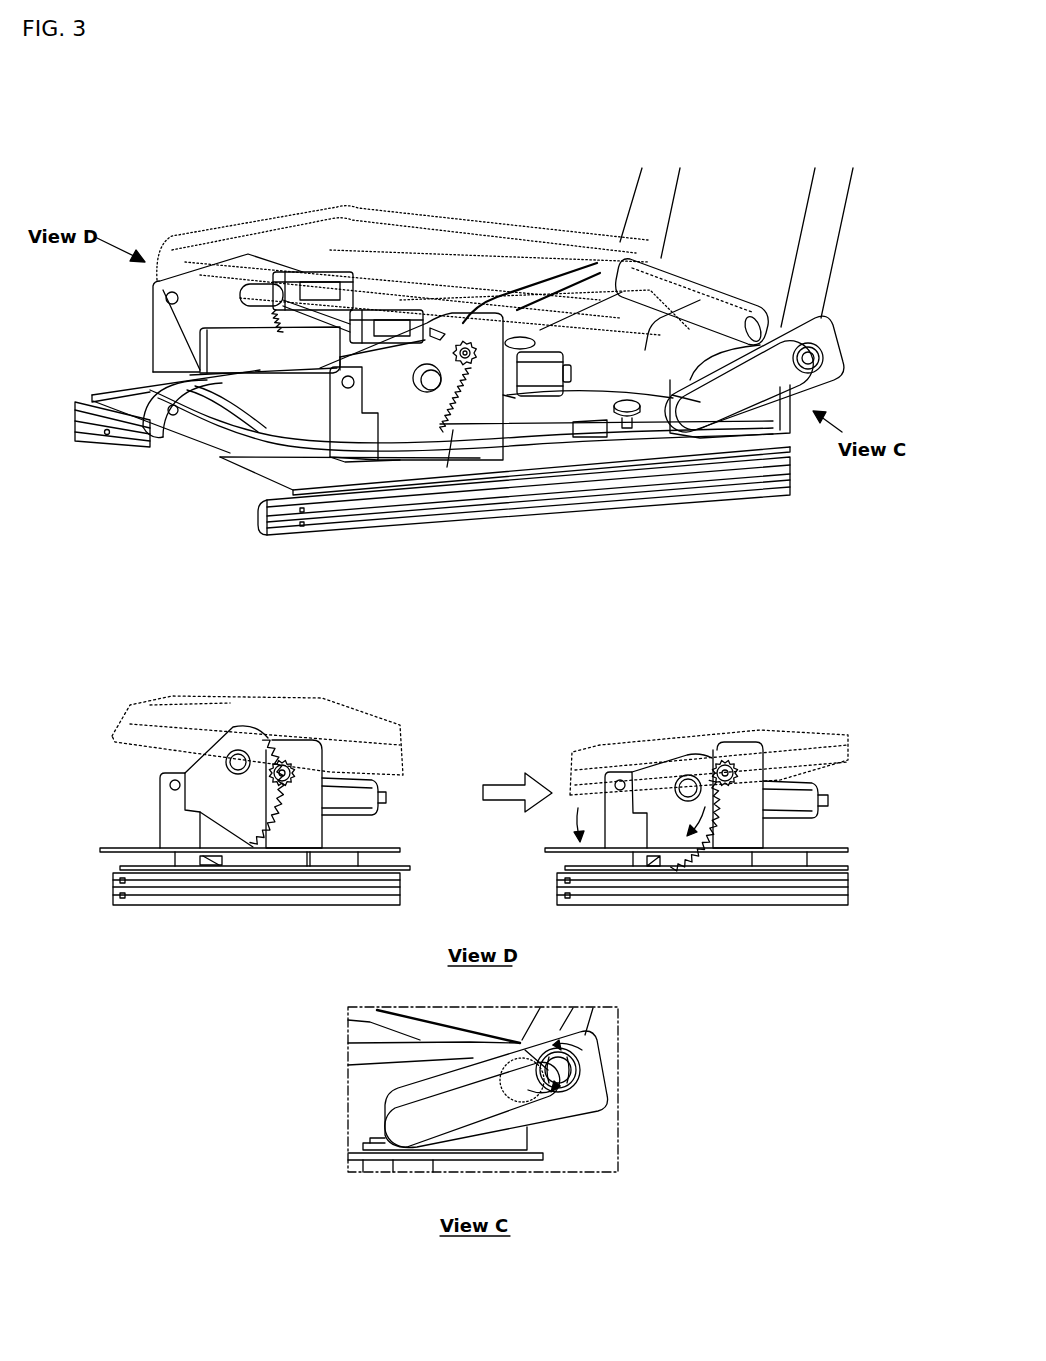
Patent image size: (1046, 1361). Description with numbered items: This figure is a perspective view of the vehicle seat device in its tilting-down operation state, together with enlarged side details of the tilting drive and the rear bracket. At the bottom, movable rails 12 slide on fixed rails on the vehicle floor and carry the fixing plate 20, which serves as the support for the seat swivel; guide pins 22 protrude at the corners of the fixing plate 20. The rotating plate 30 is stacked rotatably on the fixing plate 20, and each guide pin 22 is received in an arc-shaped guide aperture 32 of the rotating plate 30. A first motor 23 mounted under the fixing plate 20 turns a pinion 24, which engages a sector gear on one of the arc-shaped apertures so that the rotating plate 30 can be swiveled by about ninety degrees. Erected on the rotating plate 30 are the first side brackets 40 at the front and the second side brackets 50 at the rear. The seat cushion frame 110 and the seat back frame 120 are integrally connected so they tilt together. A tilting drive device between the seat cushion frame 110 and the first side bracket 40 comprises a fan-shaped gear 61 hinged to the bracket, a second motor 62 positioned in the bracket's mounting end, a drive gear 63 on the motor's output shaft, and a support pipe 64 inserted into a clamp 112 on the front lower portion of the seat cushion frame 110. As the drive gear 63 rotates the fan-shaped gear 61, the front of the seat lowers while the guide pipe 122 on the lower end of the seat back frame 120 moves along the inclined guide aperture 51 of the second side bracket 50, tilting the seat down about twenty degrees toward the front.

The movable rail 12 is at (575, 503).
The fixing plate 20 is at (238, 469).
The guide pin 22 is at (628, 430).
The first motor 23 is at (545, 350).
The pinion 24 is at (467, 340).
The rotating plate 30 is at (192, 438).
The arc-shaped guide aperture 32 is at (170, 415).
The first side bracket 40 is at (152, 347).
The second side bracket 50 is at (823, 323).
The guide aperture 51 is at (782, 408).
The fan-shaped gear 61 is at (440, 420).
The second motor 62 is at (195, 765).
The drive gear 63 is at (284, 787).
The support pipe 64 is at (427, 393).
The seat cushion frame 110 is at (208, 229).
The clamp 112 is at (298, 275).
The seat back frame 120 is at (790, 262).
The guide pipe 122 is at (824, 352).